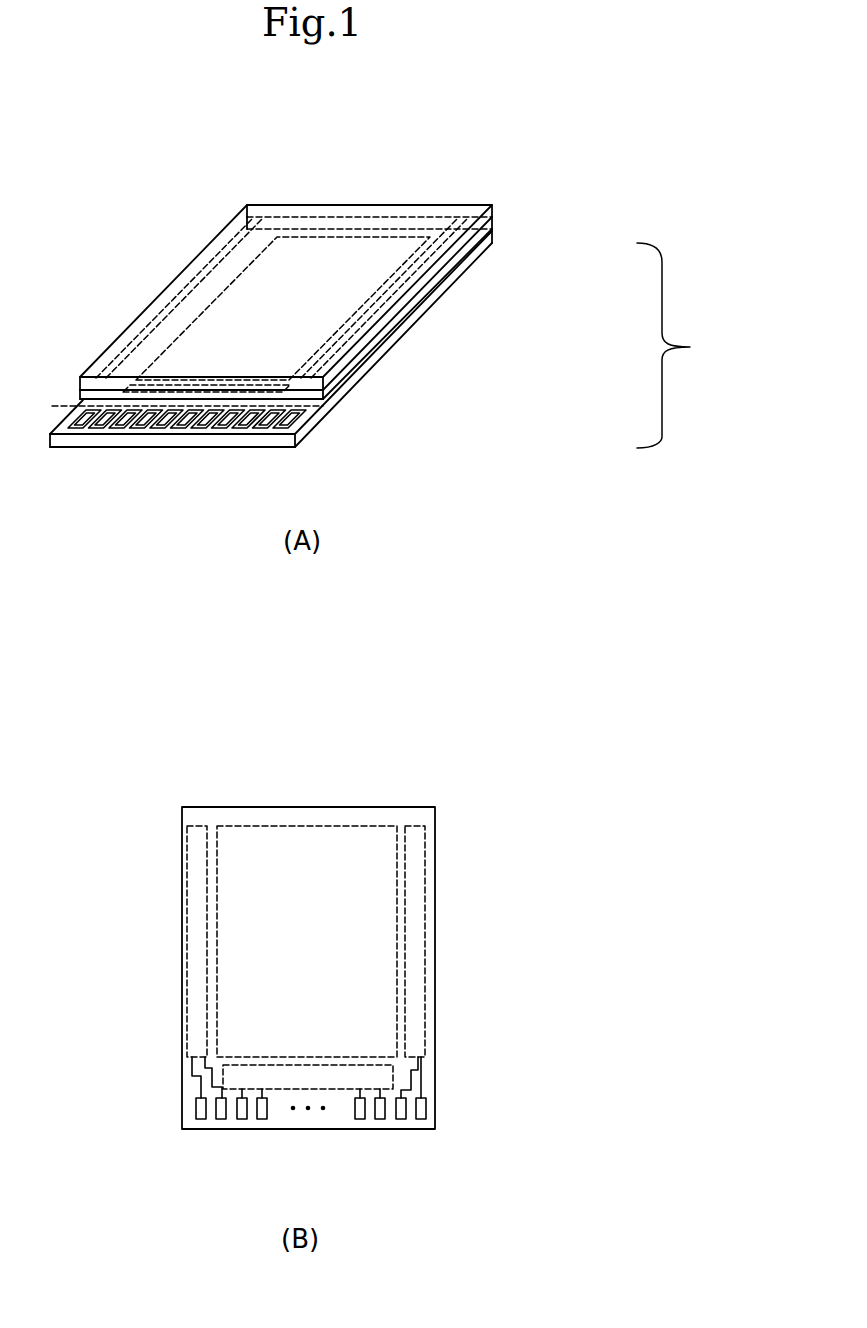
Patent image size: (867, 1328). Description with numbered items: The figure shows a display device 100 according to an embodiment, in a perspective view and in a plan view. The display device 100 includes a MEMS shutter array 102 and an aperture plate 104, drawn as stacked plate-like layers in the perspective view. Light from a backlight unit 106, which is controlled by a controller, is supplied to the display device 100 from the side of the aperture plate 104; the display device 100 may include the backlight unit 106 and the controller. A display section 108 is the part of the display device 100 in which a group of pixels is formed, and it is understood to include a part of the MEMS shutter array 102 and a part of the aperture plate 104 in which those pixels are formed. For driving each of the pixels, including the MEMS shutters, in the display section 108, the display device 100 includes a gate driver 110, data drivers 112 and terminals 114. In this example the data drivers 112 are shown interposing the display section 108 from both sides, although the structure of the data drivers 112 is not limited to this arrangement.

The display device 100 is at (687, 345).
The MEMS shutter array 102 is at (383, 357).
The aperture plate 104 is at (493, 235).
The backlight unit 106 is at (493, 213).
The display section 108 is at (352, 295).
The gate driver 110 is at (288, 385).
The data driver 112 is at (167, 323).
The terminal 114 is at (52, 431).